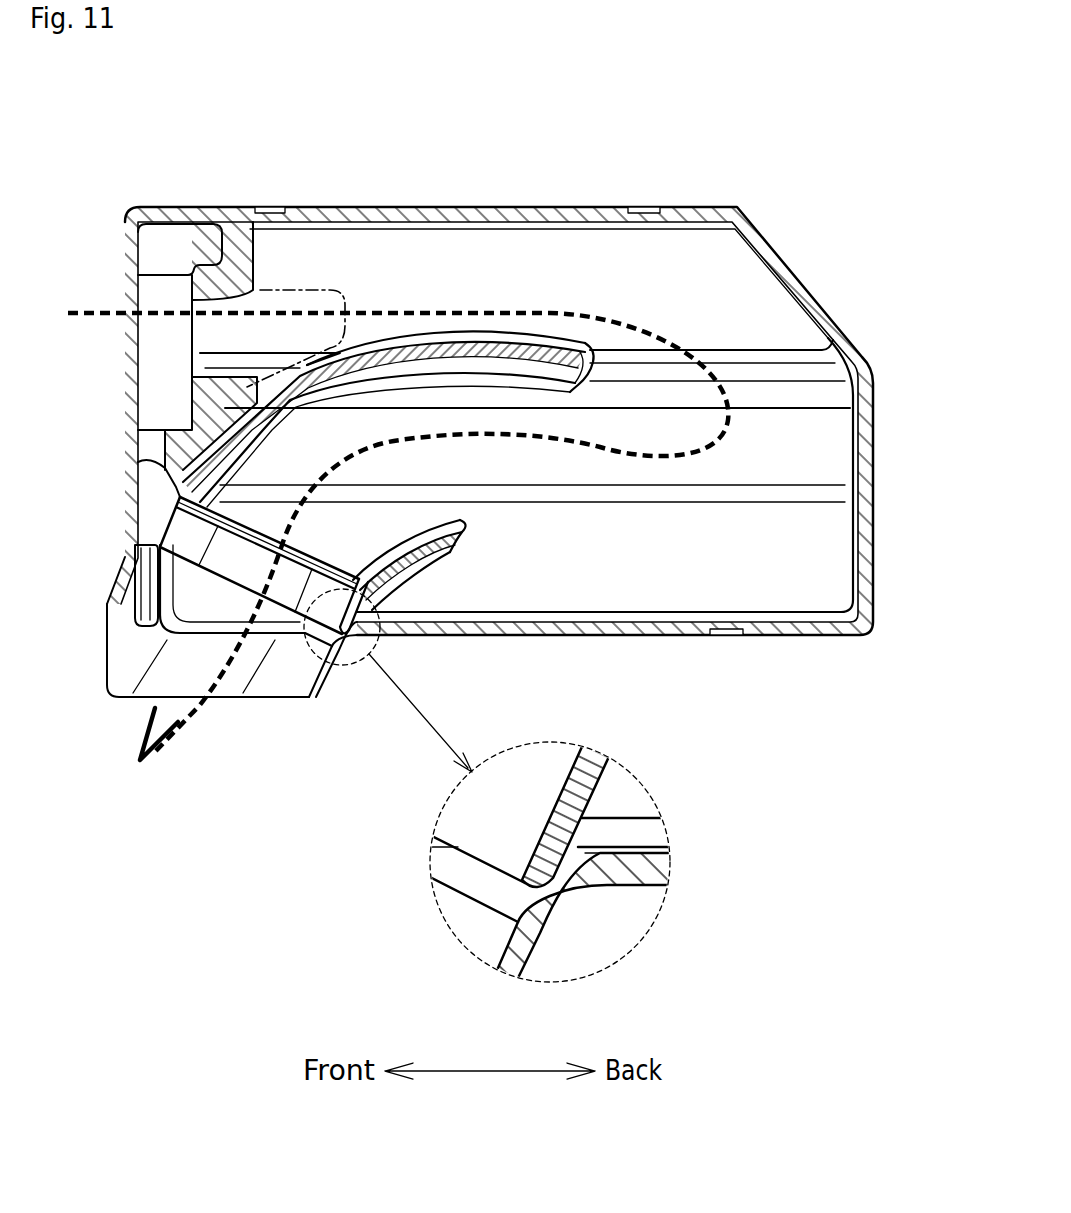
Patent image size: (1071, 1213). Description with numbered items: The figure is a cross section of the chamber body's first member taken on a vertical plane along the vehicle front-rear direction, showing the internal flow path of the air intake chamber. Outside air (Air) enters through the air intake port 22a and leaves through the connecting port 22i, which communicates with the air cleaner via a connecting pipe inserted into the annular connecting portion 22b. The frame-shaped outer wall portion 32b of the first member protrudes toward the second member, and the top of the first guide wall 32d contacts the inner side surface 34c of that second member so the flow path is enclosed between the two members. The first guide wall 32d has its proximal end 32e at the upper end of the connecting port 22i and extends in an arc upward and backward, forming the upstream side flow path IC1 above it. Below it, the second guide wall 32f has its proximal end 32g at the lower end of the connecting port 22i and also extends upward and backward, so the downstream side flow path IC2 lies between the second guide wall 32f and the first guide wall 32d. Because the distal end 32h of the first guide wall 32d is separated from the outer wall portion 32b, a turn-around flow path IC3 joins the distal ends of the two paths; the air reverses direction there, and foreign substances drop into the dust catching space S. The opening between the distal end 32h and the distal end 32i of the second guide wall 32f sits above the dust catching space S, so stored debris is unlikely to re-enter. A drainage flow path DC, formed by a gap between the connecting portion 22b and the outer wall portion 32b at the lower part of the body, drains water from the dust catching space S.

The air intake port 22a is at (258, 305).
The connecting portion 22b is at (600, 790).
The connecting port 22i is at (287, 547).
The frame-shaped outer wall portion 32b is at (872, 526).
The first guide wall 32d is at (497, 348).
The proximal end of first guide wall 32e is at (175, 487).
The second guide wall 32f is at (424, 546).
The proximal end of second guide wall 32g is at (365, 637).
The distal end of first guide wall 32h is at (578, 350).
The distal end of second guide wall 32i is at (463, 532).
The inner side surface of second member 34c is at (738, 303).
The upstream side flow path IC1 is at (416, 262).
The downstream side flow path IC2 is at (512, 478).
The turn-around flow path IC3 is at (756, 468).
The dust catching space S is at (652, 575).
The drainage flow path DC is at (577, 917).
The air flow Air is at (168, 726).